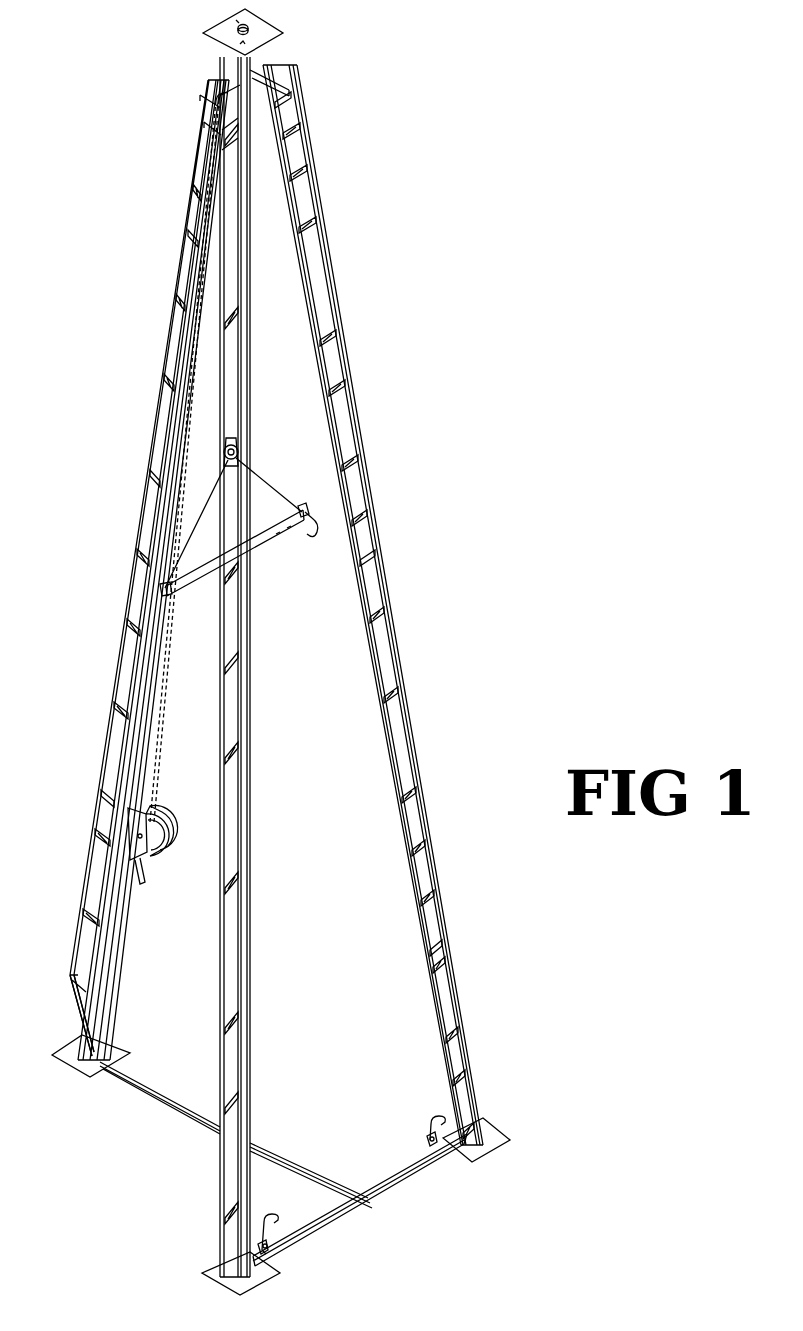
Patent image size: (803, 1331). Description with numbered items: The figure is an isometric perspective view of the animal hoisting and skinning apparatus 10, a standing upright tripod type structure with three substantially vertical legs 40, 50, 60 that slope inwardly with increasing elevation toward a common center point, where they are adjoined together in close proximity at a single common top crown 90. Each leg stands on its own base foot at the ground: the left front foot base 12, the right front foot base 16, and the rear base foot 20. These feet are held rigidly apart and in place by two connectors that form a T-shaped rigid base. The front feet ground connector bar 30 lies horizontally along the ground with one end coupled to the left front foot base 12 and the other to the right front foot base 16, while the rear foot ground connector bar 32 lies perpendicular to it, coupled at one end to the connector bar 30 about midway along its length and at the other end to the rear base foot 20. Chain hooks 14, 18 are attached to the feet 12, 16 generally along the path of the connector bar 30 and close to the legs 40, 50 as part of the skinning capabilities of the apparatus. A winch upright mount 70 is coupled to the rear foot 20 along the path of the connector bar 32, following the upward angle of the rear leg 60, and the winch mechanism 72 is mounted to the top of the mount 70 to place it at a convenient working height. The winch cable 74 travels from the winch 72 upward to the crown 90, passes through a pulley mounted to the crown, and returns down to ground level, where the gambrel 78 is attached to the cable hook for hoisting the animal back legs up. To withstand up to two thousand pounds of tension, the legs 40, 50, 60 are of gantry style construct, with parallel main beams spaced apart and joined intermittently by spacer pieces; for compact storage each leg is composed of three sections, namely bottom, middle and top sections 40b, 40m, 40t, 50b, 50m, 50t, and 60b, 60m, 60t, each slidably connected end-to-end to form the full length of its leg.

The skinning apparatus 10 is at (122, 630).
The left front foot base 12 is at (204, 1268).
The chain hook 14 is at (262, 1217).
The right front foot base 16 is at (511, 1134).
The chain hook 18 is at (431, 1128).
The rear base foot 20 is at (58, 1072).
The front feet ground connector bar 30 is at (359, 1228).
The rear foot ground connector bar 32 is at (157, 1092).
The leg 40 is at (261, 667).
The top leg section 40t is at (247, 332).
The middle leg section 40m is at (250, 664).
The bottom leg section 40b is at (252, 1011).
The leg 50 is at (370, 605).
The top leg section 50t is at (315, 202).
The middle leg section 50m is at (363, 502).
The bottom leg section 50b is at (445, 881).
The rear leg 60 is at (133, 570).
The top leg section 60t is at (181, 211).
The middle leg section 60m is at (139, 500).
The bottom leg section 60b is at (92, 815).
The winch upright mount 70 is at (116, 1007).
The winch mechanism 72 is at (154, 867).
The winch cable 74 is at (151, 756).
The gambrel 78 is at (263, 571).
The top crown 90 is at (257, 26).